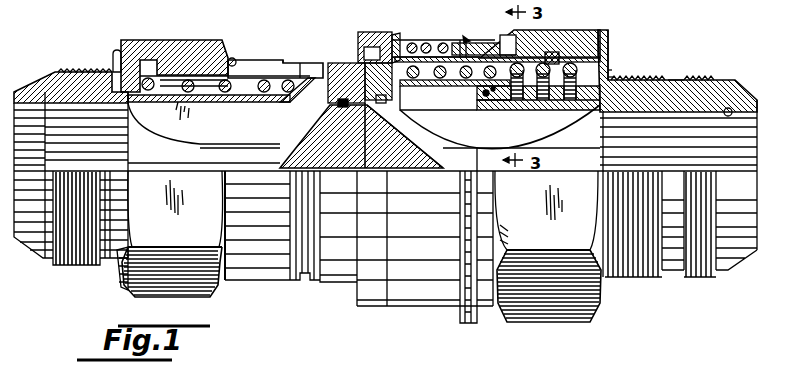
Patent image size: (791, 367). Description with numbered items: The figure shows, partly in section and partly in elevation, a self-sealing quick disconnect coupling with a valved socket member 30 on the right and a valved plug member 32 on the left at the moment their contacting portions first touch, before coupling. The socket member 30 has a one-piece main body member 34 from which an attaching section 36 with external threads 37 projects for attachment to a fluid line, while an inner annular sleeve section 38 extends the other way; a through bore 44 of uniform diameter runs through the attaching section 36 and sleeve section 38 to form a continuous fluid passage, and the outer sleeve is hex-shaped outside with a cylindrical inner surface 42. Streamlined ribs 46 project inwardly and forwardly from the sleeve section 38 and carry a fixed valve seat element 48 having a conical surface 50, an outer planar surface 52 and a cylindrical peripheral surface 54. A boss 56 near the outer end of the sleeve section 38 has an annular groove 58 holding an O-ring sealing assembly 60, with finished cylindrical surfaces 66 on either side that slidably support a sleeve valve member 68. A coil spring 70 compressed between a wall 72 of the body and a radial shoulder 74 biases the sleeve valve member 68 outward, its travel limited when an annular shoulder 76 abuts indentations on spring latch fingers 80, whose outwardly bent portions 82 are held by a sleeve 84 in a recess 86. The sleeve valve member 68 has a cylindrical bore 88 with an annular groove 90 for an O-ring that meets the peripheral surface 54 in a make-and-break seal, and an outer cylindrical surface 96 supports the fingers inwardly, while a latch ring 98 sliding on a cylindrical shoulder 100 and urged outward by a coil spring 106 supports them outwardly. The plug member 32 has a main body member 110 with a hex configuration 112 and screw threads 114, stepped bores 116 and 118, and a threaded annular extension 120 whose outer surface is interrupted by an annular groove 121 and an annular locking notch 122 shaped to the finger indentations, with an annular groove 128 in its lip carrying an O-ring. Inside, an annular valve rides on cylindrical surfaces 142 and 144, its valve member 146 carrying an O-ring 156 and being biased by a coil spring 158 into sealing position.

The valved socket member 30 is at (546, 328).
The valved plug member 32 is at (137, 296).
The main body member 34 is at (564, 30).
The attaching section 36 is at (672, 79).
The external threads 37 is at (698, 279).
The inner annular sleeve section 38 is at (548, 102).
The cylindrical inner surface 42 is at (540, 44).
The through bore 44 is at (735, 110).
The ribs 46 is at (520, 148).
The fixed valve seat element 48 is at (446, 165).
The conical surface 50 is at (424, 137).
The outer planar surface 52 is at (366, 158).
The cylindrical peripheral surface 54 is at (374, 116).
The boss 56 is at (506, 102).
The annular groove 58 is at (483, 105).
The O-ring sealing assembly 60 is at (472, 101).
The cylindrical surfaces 66 is at (508, 49).
The sleeve valve member 68 is at (428, 44).
The coil spring 70 is at (554, 58).
The wall 72 is at (610, 72).
The radial shoulder 74 is at (412, 44).
The annular shoulder 76 is at (455, 95).
The spring latch fingers 80 is at (484, 46).
The outwardly bent portions 82 is at (605, 55).
The sleeve 84 is at (611, 68).
The recess 86 is at (600, 42).
The cylindrical bore 88 is at (365, 104).
The annular groove 90 is at (380, 104).
The outer cylindrical surface 96 is at (374, 45).
The latch ring 98 is at (397, 38).
The cylindrical shoulder 100 is at (466, 34).
The coil spring 106 is at (465, 38).
The main body member 110 is at (118, 50).
The hex configuration 112 is at (181, 293).
The screw threads 114 is at (82, 70).
The stepped bore 116 is at (85, 104).
The stepped bore 118 is at (147, 60).
The annular extension 120 is at (248, 60).
The annular groove 121 is at (285, 60).
The annular locking notch 122 is at (312, 63).
The annular groove 128 is at (348, 83).
The cylindrical surface 142 is at (194, 105).
The cylindrical surface 144 is at (296, 100).
The valve member 146 is at (280, 170).
The O-ring 156 is at (332, 99).
The coil spring 158 is at (233, 57).